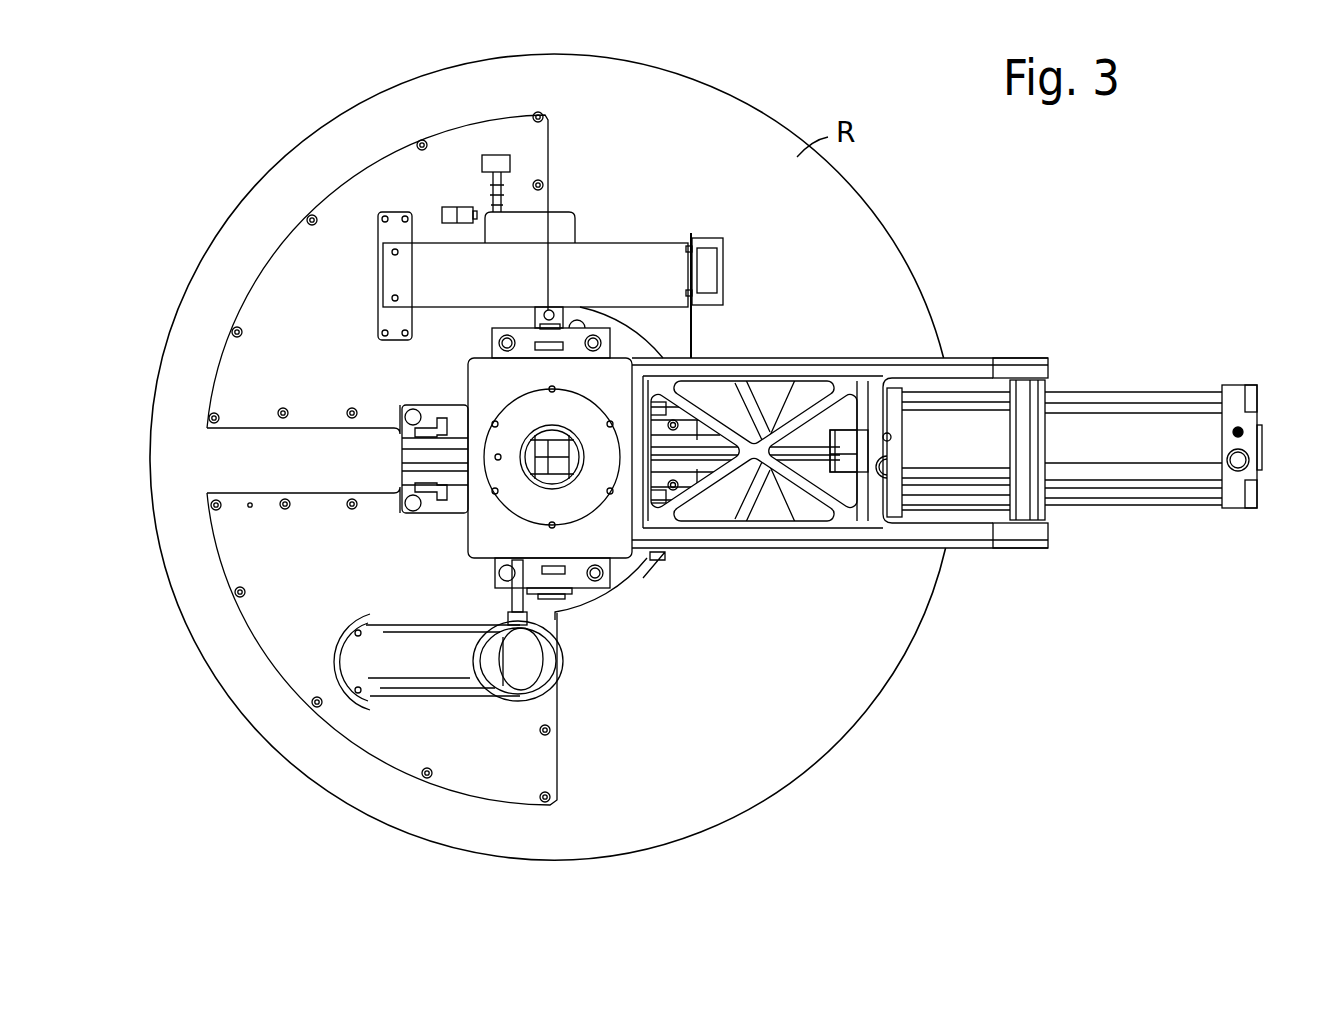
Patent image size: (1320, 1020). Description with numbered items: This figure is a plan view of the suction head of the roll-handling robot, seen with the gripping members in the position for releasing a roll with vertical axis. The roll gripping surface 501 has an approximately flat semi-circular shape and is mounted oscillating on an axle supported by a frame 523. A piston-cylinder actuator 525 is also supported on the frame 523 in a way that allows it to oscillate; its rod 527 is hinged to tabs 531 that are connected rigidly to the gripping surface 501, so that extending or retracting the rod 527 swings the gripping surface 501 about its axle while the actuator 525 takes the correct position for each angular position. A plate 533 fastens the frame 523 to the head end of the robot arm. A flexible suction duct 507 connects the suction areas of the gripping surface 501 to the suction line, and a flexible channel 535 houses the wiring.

The gripping surface 501 is at (318, 715).
The flexible suction duct 507 is at (445, 680).
The frame 523 is at (878, 540).
The piston-cylinder actuator 525 is at (1135, 423).
The rod 527 is at (812, 450).
The tabs 531 is at (400, 478).
The plate 533 is at (490, 543).
The flexible channel for the wiring 535 is at (615, 257).